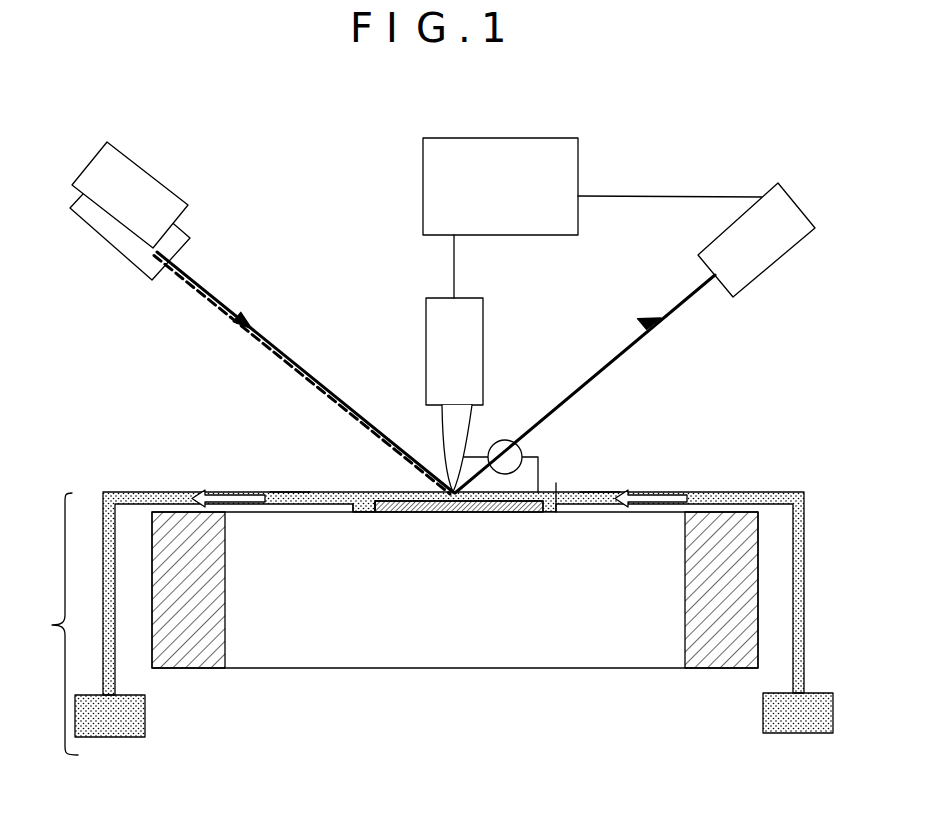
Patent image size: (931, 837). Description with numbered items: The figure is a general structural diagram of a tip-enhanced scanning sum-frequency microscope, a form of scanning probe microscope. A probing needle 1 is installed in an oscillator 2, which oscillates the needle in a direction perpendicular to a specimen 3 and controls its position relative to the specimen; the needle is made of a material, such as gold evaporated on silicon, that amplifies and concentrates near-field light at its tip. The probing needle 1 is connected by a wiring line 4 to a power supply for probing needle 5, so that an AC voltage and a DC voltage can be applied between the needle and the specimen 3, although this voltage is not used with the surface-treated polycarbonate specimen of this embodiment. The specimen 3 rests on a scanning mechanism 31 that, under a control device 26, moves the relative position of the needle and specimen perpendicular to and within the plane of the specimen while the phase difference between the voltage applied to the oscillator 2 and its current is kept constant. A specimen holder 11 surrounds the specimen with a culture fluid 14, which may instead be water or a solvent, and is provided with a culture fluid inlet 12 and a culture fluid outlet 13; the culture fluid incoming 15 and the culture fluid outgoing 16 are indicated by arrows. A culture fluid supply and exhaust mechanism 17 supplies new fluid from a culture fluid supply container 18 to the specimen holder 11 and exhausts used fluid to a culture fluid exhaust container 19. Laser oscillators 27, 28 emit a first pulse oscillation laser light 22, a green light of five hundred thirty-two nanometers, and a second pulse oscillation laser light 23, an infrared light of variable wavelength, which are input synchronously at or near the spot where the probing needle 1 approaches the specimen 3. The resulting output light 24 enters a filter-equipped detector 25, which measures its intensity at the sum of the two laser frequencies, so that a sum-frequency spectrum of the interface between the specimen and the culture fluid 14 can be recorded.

The probing needle 1 is at (462, 435).
The oscillator 2 is at (470, 338).
The specimen 3 is at (403, 500).
The wiring line 4 is at (540, 478).
The power supply for probing needle 5 is at (522, 448).
The specimen holder 11 is at (357, 492).
The culture fluid inlet 12 is at (602, 492).
The culture fluid outlet 13 is at (290, 493).
The culture fluid 14 is at (355, 490).
The culture fluid incoming 15 is at (680, 492).
The culture fluid outgoing 16 is at (232, 498).
The culture fluid supply and exhaust mechanism 17 is at (50, 624).
The culture fluid supply container 18 is at (760, 710).
The culture fluid exhaust container 19 is at (145, 715).
The first pulse oscillation laser light 22 is at (217, 307).
The second pulse oscillation laser light 23 is at (200, 283).
The output light 24 is at (683, 298).
The filter-equipped detector 25 is at (755, 275).
The control device 26 is at (563, 172).
The laser oscillator 27 is at (112, 248).
The laser oscillator 28 is at (152, 170).
The scanning mechanism 31 is at (455, 642).